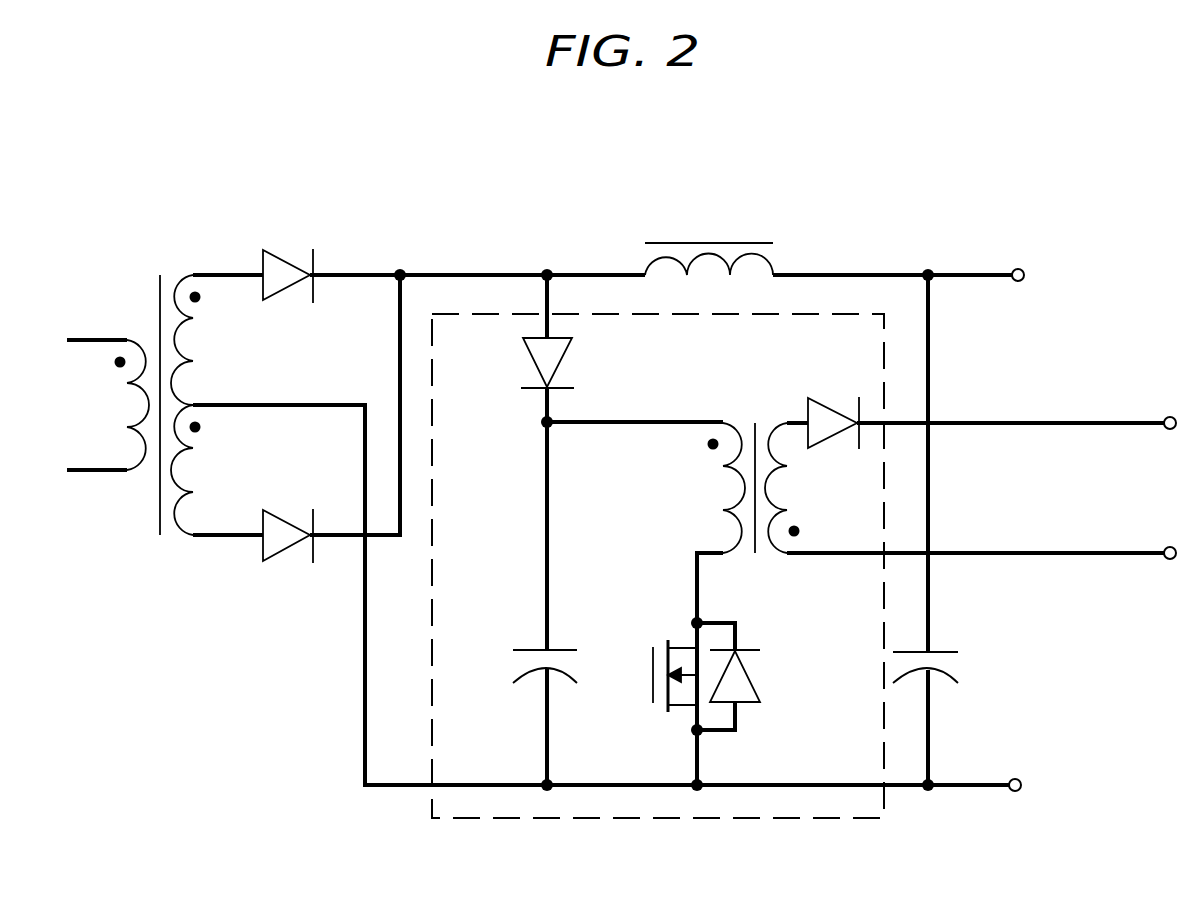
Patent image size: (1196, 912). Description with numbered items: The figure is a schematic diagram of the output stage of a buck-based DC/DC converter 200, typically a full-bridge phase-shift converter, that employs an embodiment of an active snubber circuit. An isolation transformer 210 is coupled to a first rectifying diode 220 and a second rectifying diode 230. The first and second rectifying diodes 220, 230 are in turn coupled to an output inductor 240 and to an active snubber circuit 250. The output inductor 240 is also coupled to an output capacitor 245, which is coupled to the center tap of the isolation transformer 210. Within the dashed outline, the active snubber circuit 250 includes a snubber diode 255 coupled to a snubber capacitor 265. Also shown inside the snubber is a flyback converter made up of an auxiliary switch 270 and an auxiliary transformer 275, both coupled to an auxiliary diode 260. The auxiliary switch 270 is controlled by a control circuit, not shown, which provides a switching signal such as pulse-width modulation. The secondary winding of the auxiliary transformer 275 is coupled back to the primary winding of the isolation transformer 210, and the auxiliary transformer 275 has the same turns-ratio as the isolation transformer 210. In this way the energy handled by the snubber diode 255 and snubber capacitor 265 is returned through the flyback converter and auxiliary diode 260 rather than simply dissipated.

The DC/DC converter 200 is at (1008, 112).
The isolation transformer 210 is at (158, 535).
The first rectifying diode 220 is at (287, 262).
The second rectifying diode 230 is at (287, 552).
The output inductor 240 is at (708, 243).
The output capacitor 245 is at (948, 650).
The active snubber circuit 250 is at (640, 818).
The snubber diode 255 is at (563, 360).
The auxiliary diode 260 is at (832, 403).
The snubber capacitor 265 is at (527, 648).
The auxiliary switch 270 is at (660, 640).
The auxiliary transformer 275 is at (755, 553).